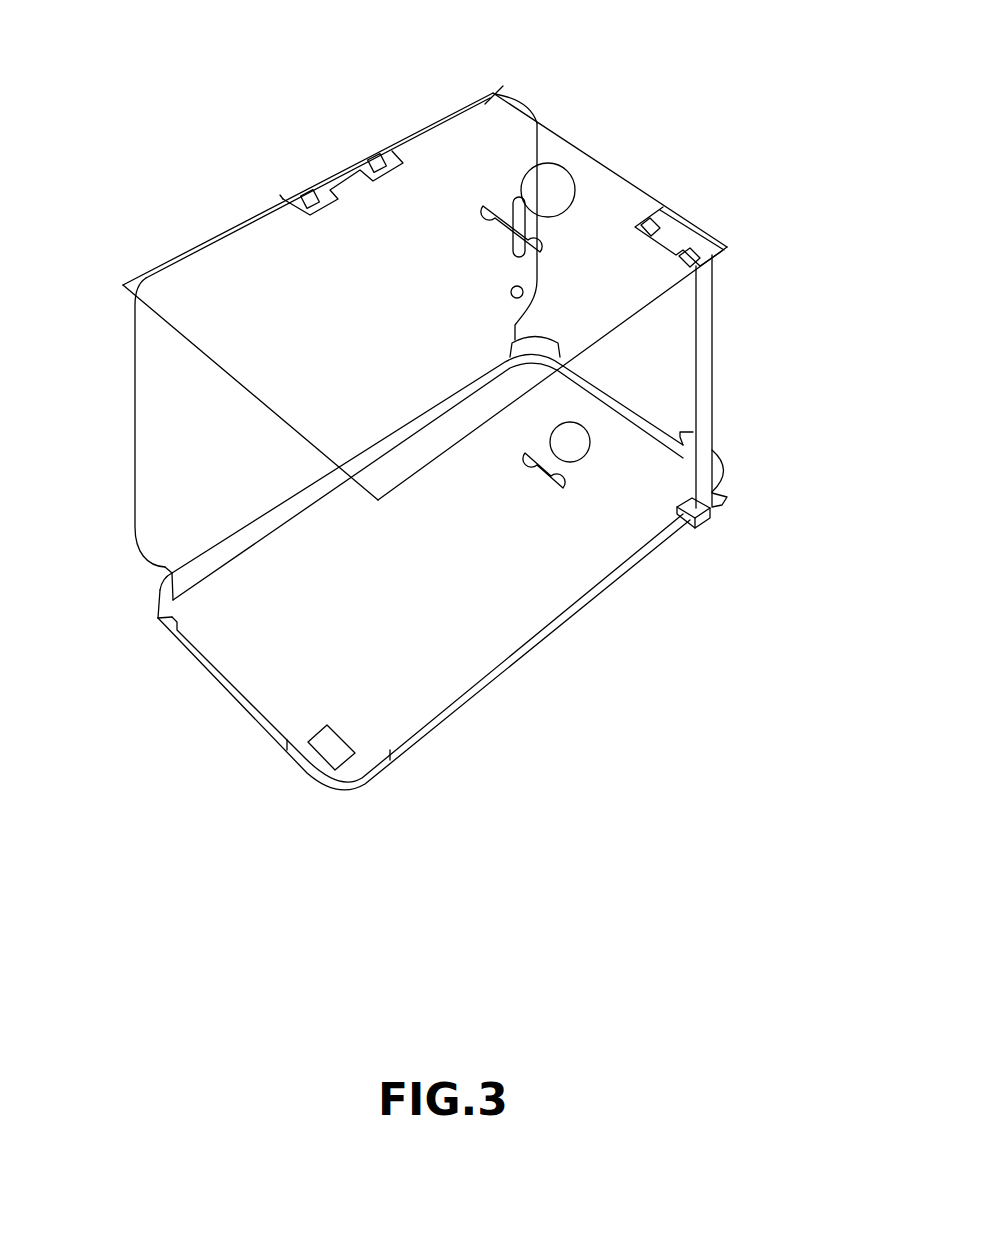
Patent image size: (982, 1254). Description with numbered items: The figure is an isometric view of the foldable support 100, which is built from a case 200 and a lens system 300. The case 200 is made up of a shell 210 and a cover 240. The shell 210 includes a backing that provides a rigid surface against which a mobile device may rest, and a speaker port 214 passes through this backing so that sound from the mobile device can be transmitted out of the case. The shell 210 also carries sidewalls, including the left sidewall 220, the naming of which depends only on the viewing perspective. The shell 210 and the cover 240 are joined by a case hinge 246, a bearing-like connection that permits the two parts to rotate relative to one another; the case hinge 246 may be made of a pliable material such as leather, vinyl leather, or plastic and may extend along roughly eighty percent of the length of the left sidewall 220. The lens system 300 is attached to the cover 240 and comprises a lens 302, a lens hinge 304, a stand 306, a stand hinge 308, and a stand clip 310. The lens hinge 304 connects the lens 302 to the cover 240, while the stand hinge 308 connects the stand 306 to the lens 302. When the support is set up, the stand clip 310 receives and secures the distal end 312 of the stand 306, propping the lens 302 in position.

The foldable support 100 is at (432, 115).
The case 200 is at (135, 345).
The shell 210 is at (213, 678).
The speaker port 214 is at (343, 760).
The left sidewall 220 is at (160, 610).
The cover 240 is at (135, 440).
The case hinge 246 is at (165, 568).
The lens system 300 is at (563, 137).
The lens 302 is at (490, 100).
The lens hinge 304 is at (300, 197).
The stand 306 is at (714, 347).
The stand hinge 308 is at (683, 222).
The stand clip 310 is at (695, 522).
The distal end 312 is at (708, 510).